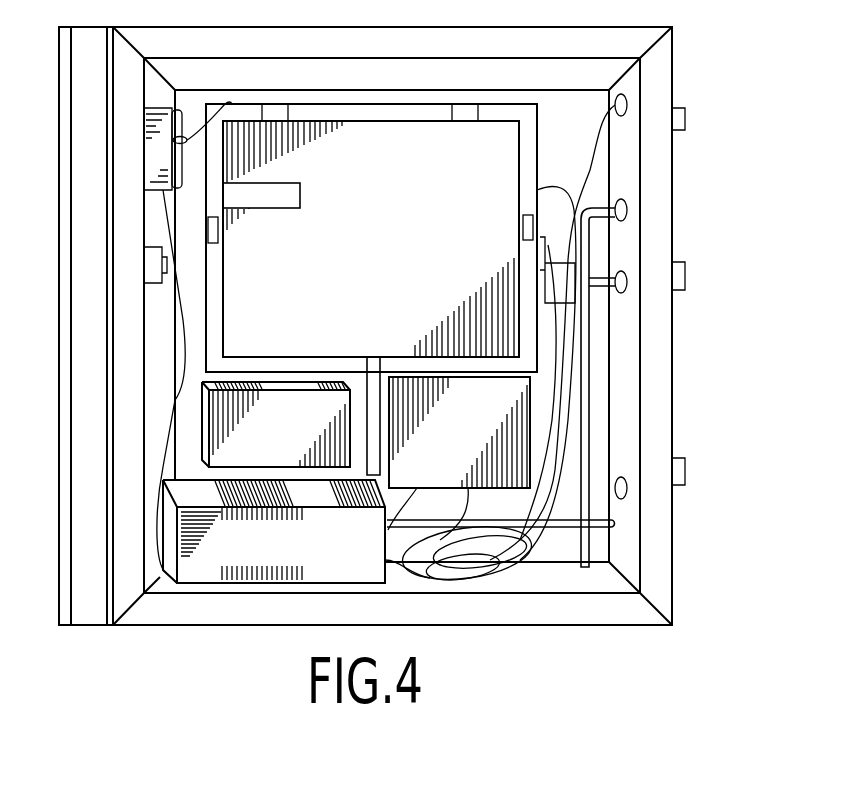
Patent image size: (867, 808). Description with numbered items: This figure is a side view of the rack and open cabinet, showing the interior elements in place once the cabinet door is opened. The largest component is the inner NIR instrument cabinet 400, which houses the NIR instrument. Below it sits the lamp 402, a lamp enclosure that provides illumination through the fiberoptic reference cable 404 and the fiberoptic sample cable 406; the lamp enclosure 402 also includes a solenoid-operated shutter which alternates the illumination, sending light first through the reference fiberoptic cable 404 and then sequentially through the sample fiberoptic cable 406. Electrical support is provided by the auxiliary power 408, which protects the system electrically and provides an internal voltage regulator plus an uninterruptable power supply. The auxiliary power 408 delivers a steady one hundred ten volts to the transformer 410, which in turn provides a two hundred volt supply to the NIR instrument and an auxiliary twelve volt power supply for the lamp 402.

The inner NIR instrument cabinet 400 is at (395, 250).
The lamp 402 is at (482, 443).
The fiberoptic reference cable 404 is at (627, 210).
The fiberoptic sample cable 406 is at (627, 281).
The auxiliary power 408 is at (369, 559).
The transformer 410 is at (305, 441).